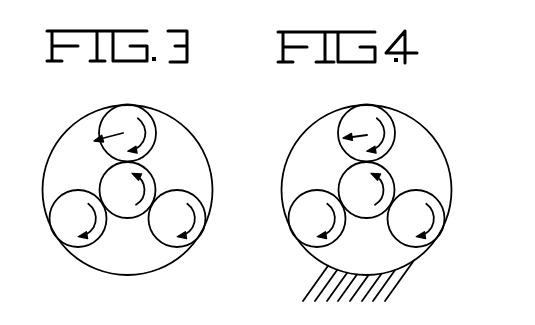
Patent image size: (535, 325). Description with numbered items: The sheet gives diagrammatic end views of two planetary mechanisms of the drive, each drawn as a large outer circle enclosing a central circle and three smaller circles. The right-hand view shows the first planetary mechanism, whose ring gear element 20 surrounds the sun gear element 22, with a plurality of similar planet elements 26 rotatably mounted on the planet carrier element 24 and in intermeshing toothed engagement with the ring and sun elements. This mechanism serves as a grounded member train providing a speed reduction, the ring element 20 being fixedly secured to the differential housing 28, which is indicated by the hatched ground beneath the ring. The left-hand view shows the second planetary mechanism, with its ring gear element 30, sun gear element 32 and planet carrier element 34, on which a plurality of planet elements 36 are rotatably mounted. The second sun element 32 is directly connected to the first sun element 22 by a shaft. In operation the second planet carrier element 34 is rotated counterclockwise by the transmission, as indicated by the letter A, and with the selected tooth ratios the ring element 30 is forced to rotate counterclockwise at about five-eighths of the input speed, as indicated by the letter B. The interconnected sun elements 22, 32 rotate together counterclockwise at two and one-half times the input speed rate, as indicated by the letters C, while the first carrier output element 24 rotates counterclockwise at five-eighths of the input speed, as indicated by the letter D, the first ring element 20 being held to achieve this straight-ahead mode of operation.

In FIG. 4, the ring gear element 20 is at (427, 130).
In FIG. 4, the sun gear element 22 is at (393, 179).
In FIG. 4, the planet carrier element 24 is at (363, 136).
In FIG. 4, the planet elements 26 is at (415, 246).
In FIG. 4, the differential housing 28 is at (396, 284).
In FIG. 3, the ring gear element 30 is at (179, 123).
In FIG. 3, the sun gear element 32 is at (147, 167).
In FIG. 3, the planet carrier element 34 is at (120, 137).
In FIG. 3, the planet elements 36 is at (167, 244).
In FIG. 3, the counterclockwise rotation of second planet carrier A is at (112, 151).
In FIG. 3, the counterclockwise rotation of second ring element B is at (35, 193).
In FIG. 3, the counterclockwise rotation of sun elements C is at (155, 181).
In FIG. 4, the counterclockwise rotation of sun elements C is at (378, 192).
In FIG. 4, the counterclockwise rotation of carrier output element D is at (350, 157).